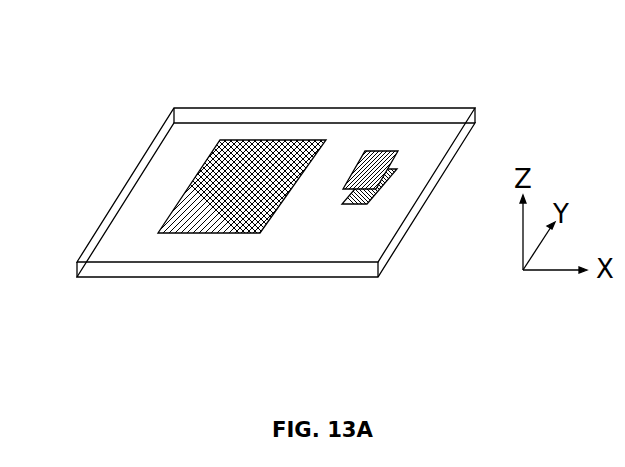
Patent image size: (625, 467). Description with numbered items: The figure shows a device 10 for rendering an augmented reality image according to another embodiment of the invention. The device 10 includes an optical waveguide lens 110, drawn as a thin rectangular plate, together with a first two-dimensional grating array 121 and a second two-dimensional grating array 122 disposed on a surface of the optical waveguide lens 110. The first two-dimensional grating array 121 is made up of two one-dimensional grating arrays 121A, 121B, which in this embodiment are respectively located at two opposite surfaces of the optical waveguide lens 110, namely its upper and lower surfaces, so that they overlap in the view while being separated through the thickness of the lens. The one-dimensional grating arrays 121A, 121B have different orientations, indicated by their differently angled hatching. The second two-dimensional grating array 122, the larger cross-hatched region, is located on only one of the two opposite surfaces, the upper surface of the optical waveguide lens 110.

The device for rendering an augmented reality image 10 is at (426, 358).
The optical waveguide lens 110 is at (100, 268).
The first two-dimensional grating array 121 is at (406, 110).
The one-dimensional grating array 121A is at (362, 157).
The one-dimensional grating array 121B is at (399, 168).
The second two-dimensional grating array 122 is at (220, 233).